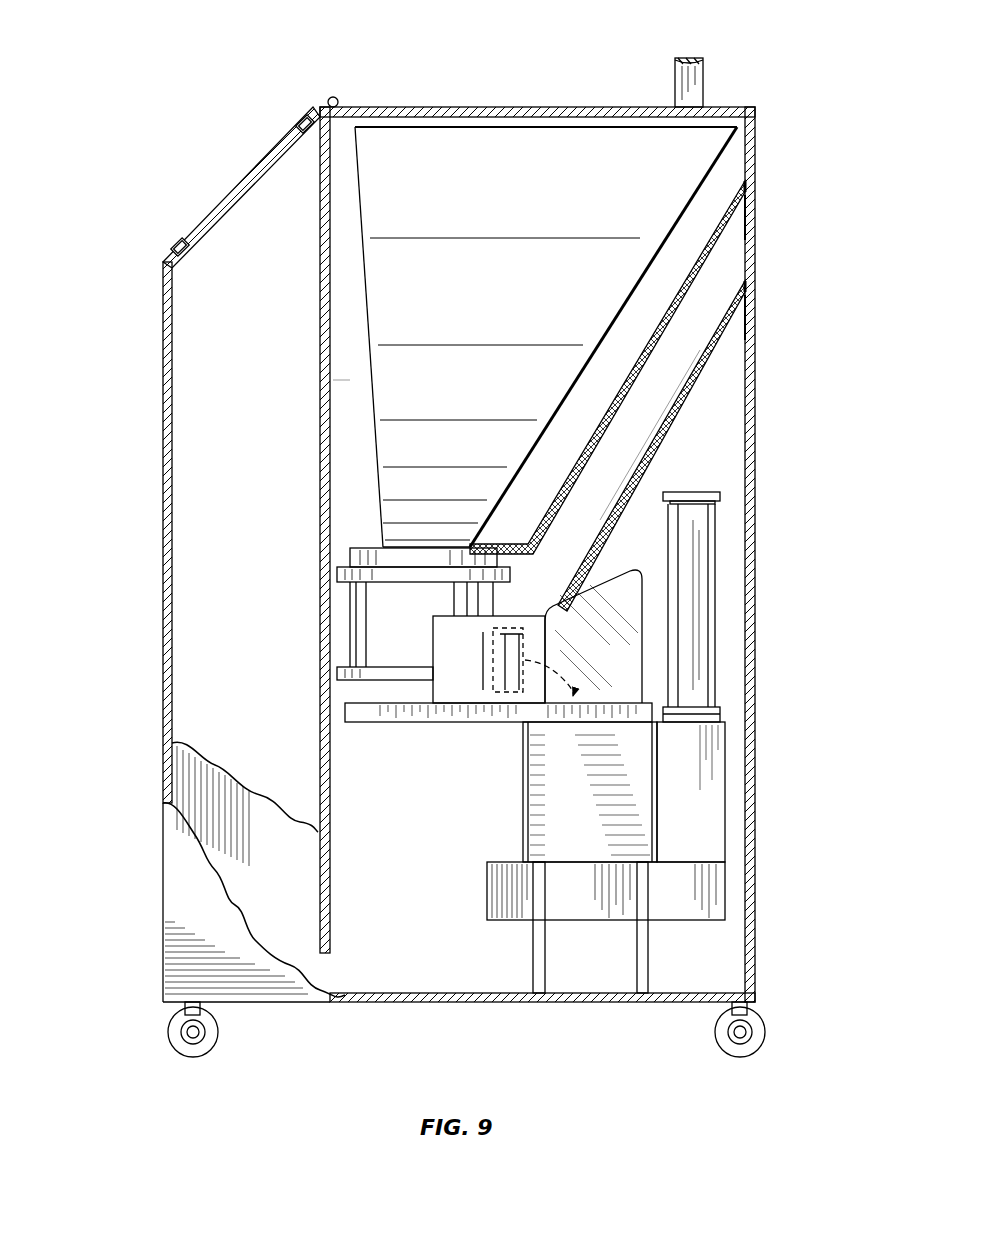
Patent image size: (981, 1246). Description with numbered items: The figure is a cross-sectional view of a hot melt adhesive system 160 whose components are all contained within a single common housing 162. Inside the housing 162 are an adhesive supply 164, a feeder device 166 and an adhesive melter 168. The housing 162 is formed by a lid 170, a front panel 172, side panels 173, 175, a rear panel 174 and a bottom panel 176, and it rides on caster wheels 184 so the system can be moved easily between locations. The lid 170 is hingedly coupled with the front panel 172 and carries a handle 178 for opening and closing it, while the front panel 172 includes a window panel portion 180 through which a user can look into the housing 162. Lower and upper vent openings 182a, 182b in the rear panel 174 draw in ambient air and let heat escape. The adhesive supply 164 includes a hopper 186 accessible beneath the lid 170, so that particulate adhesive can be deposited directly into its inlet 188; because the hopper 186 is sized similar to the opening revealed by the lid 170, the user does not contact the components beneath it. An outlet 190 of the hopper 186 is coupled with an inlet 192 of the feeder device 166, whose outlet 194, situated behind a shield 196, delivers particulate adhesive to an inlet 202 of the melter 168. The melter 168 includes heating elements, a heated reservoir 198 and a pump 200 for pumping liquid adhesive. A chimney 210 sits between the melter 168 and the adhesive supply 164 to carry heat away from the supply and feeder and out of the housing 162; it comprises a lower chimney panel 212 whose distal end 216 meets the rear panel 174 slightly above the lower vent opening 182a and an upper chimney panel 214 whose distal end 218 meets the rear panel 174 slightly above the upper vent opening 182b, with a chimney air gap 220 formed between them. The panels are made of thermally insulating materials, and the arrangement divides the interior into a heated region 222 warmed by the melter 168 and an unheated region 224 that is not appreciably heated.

The hot melt adhesive system 160 is at (140, 64).
The housing 162 is at (158, 404).
The adhesive supply 164 is at (343, 283).
The feeder device 166 is at (340, 620).
The adhesive melter 168 is at (476, 790).
The lid 170 is at (488, 107).
The front panel 172 is at (165, 505).
The side panel 173 is at (250, 934).
The rear panel 174 is at (750, 614).
The side panel 175 is at (300, 861).
The bottom panel 176 is at (481, 1002).
The handle 178 is at (689, 58).
The window panel portion 180 is at (236, 190).
The lower vent opening 182a is at (750, 314).
The upper vent opening 182b is at (750, 217).
The caster wheels 184 is at (176, 1040).
The hopper 186 is at (510, 300).
The inlet 188 is at (595, 127).
The outlet 190 is at (390, 560).
The inlet 192 is at (428, 548).
The outlet 194 is at (525, 650).
The shield 196 is at (437, 637).
The heated reservoir 198 is at (495, 894).
The pump 200 is at (703, 785).
The inlet 202 is at (603, 703).
The chimney 210 is at (693, 254).
The lower chimney panel 212 is at (698, 362).
The upper chimney panel 214 is at (584, 468).
The distal end 216 is at (750, 288).
The distal end 218 is at (750, 190).
The chimney air gap 220 is at (650, 394).
The heated region 222 is at (336, 863).
The unheated region 224 is at (348, 393).